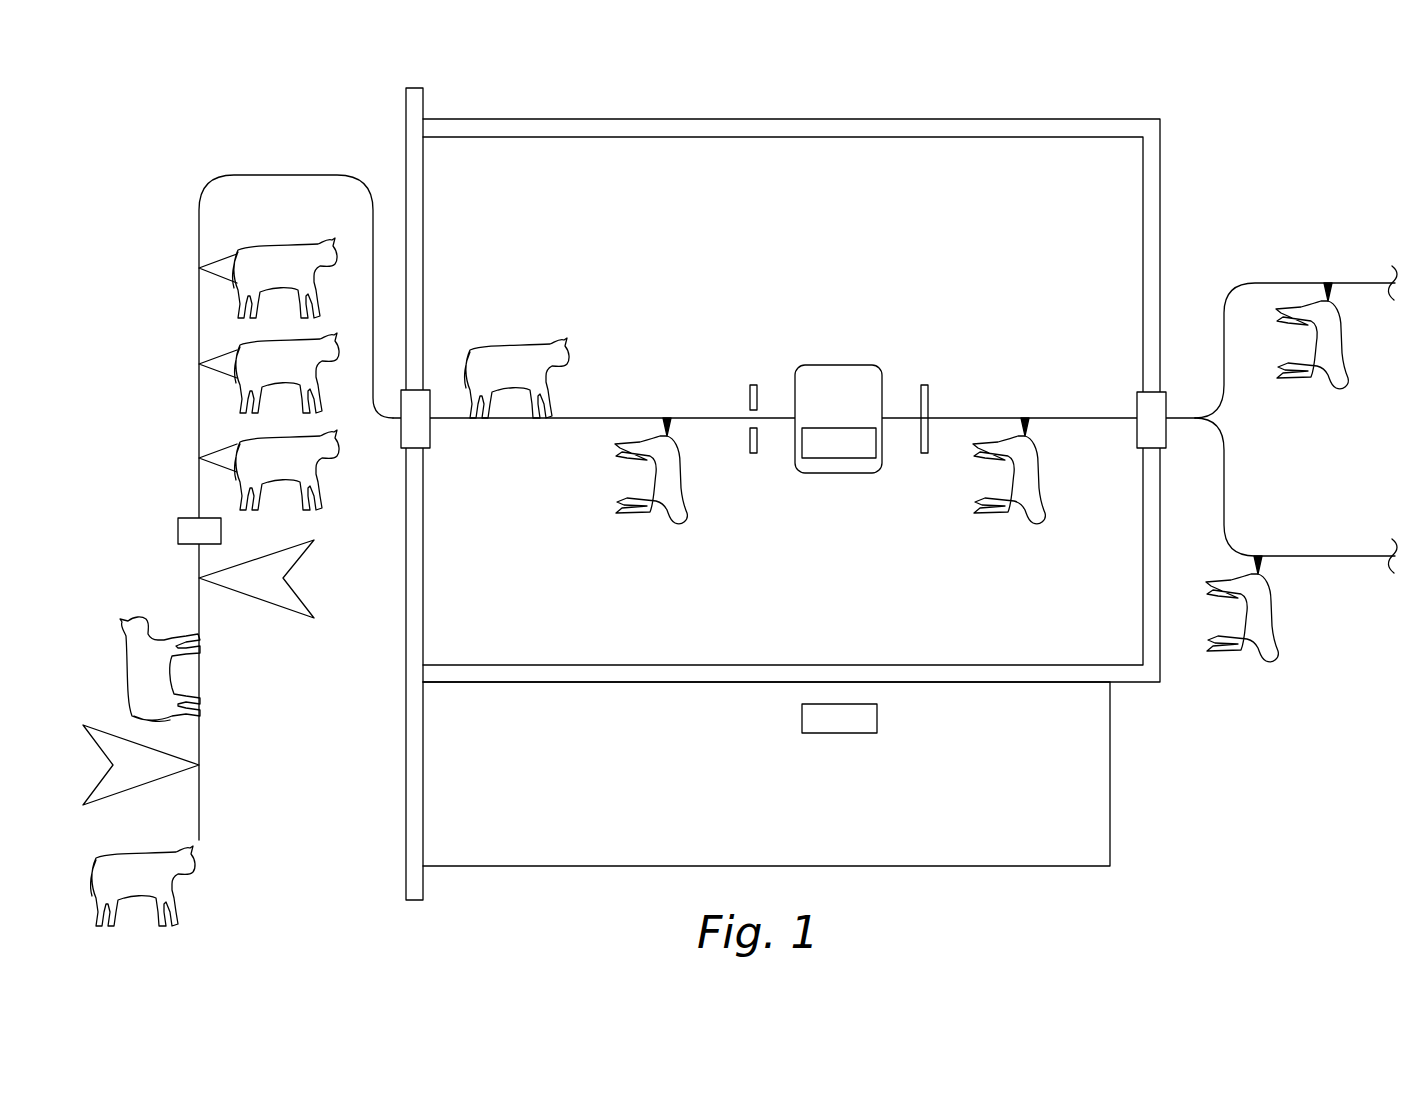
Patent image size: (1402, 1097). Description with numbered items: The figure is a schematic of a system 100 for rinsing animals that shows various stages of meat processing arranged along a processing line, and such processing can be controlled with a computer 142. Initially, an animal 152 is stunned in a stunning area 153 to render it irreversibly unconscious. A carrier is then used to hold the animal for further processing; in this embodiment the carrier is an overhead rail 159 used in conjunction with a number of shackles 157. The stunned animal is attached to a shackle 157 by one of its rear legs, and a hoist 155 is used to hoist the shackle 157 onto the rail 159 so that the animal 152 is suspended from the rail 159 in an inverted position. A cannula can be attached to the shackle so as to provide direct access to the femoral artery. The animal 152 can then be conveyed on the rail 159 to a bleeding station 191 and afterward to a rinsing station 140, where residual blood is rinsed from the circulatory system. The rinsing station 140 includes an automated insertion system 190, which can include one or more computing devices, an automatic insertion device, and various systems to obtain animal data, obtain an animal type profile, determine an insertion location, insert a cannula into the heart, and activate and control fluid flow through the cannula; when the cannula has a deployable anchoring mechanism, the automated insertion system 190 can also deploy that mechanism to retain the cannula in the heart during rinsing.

The system 100 is at (345, 98).
The overhead rail 159 is at (288, 176).
The shackle 157 is at (217, 452).
The bleeding station 191 is at (178, 530).
The hoist 155 is at (250, 603).
The stunning area 153 is at (141, 790).
The animal 152 is at (195, 864).
The rinsing station 140 is at (838, 400).
The automated insertion system 190 is at (839, 444).
The computer 142 is at (840, 733).